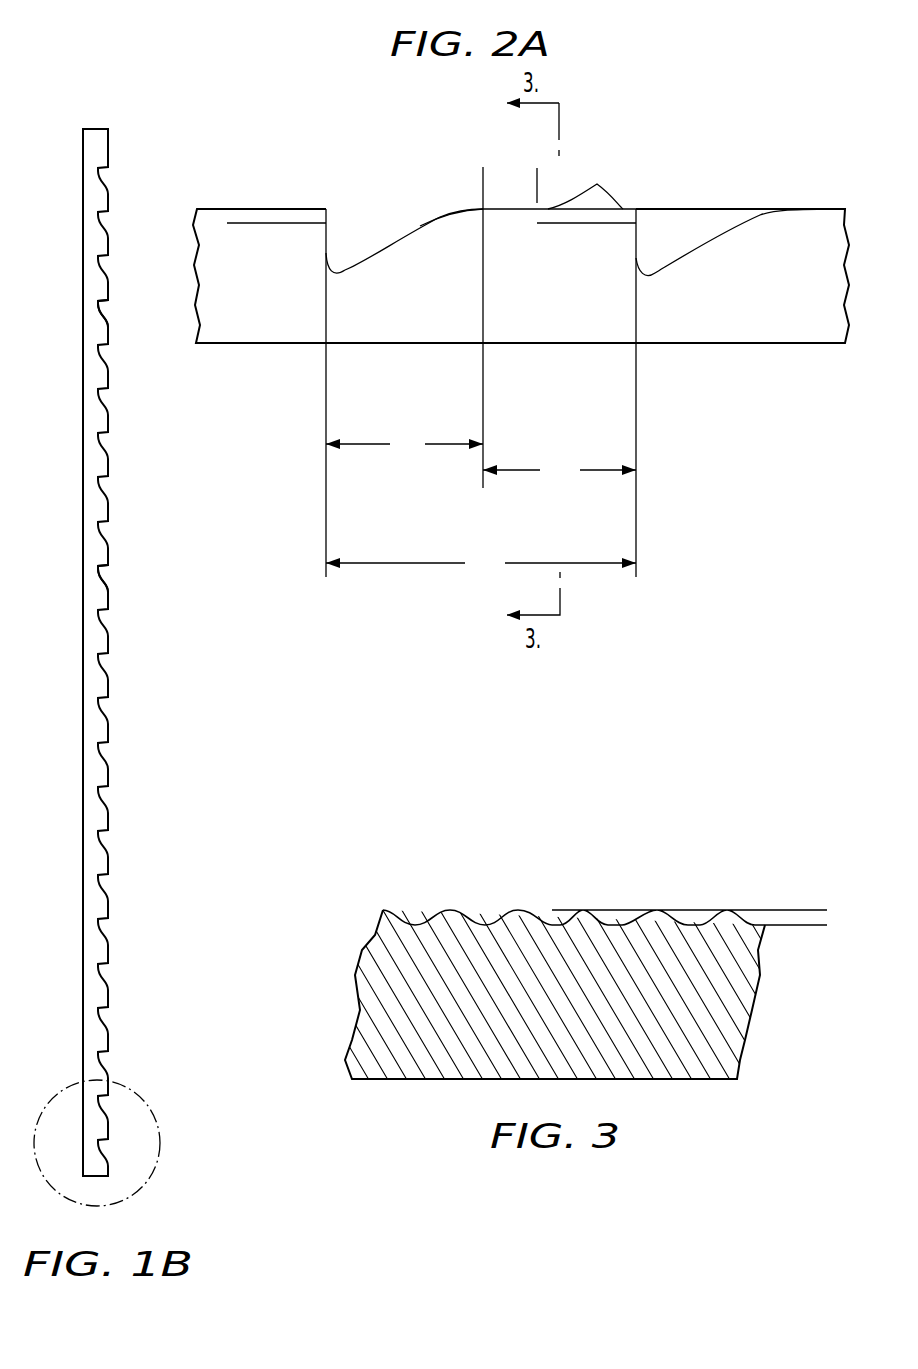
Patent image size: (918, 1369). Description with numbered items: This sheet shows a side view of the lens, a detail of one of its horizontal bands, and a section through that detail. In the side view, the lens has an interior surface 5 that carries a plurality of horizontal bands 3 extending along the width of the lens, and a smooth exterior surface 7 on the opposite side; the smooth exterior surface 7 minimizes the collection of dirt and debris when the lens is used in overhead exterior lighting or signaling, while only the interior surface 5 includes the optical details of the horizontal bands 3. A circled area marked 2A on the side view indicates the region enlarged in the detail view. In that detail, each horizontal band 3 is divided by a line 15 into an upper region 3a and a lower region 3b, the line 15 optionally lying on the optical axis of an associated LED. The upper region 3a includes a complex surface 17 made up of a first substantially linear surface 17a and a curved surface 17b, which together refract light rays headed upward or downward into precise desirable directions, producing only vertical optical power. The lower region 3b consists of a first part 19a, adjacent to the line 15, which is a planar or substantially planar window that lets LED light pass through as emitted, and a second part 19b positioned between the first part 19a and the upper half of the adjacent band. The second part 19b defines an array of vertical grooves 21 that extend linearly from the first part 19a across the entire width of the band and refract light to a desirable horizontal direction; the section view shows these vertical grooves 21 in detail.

In FIG. 2A, the horizontal band 3 is at (378, 156).
In FIG. 1B, the horizontal band 3 is at (115, 588).
In FIG. 1B, the interior surface 5 is at (108, 327).
In FIG. 1B, the smooth exterior surface 7 is at (83, 421).
In FIG. 2A, the line 15 is at (480, 176).
In FIG. 2A, the complex surface 17 is at (390, 242).
In FIG. 2A, the first substantially linear surface 17a is at (345, 268).
In FIG. 2A, the curved surface 17b is at (440, 213).
In FIG. 2A, the first part 19a is at (517, 205).
In FIG. 2A, the second part 19b is at (586, 179).
In FIG. 3, the second part 19b is at (635, 895).
In FIG. 2A, the vertical grooves 21 is at (609, 228).
In FIG. 3, the vertical grooves 21 is at (412, 924).
In FIG. 2A, the upper region 3a is at (404, 444).
In FIG. 2A, the lower region 3b is at (559, 470).
In FIG. 1B, the detail view area 2A is at (152, 1112).